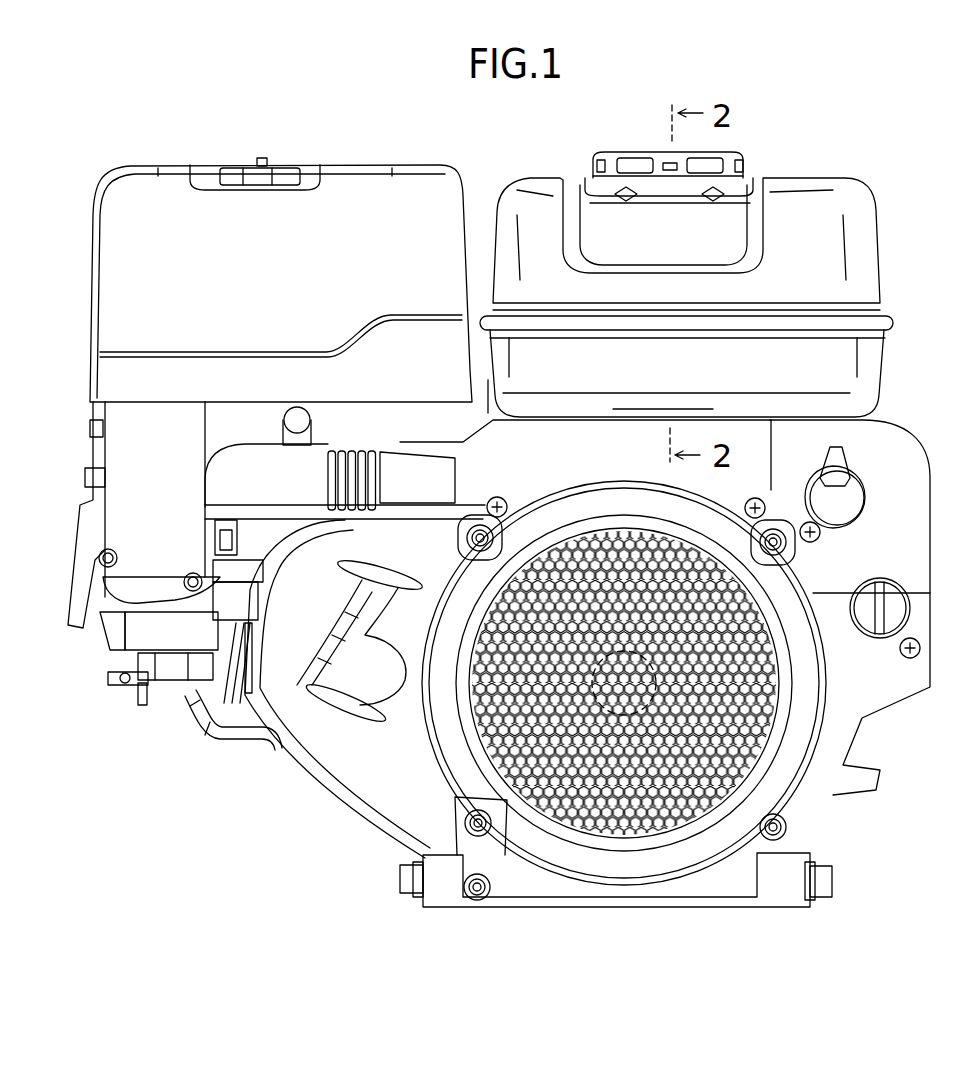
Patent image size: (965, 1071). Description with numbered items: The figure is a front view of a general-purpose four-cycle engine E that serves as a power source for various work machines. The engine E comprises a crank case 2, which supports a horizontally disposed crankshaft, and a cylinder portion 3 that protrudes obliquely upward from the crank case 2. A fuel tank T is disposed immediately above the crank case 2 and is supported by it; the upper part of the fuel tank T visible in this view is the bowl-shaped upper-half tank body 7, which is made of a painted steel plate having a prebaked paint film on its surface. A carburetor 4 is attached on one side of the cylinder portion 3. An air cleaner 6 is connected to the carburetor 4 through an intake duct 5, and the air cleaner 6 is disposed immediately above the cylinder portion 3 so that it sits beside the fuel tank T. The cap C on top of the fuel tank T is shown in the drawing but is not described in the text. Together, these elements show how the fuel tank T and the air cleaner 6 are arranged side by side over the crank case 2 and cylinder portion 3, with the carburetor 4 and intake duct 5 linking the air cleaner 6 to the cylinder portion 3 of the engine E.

The crank case 2 is at (793, 880).
The cylinder portion 3 is at (210, 657).
The carburetor 4 is at (140, 632).
The intake duct 5 is at (130, 463).
The air cleaner 6 is at (282, 277).
The upper-half tank body 7 is at (690, 585).
The fuel cap C is at (735, 152).
The fuel tank T is at (806, 268).
The general-purpose engine E is at (913, 437).